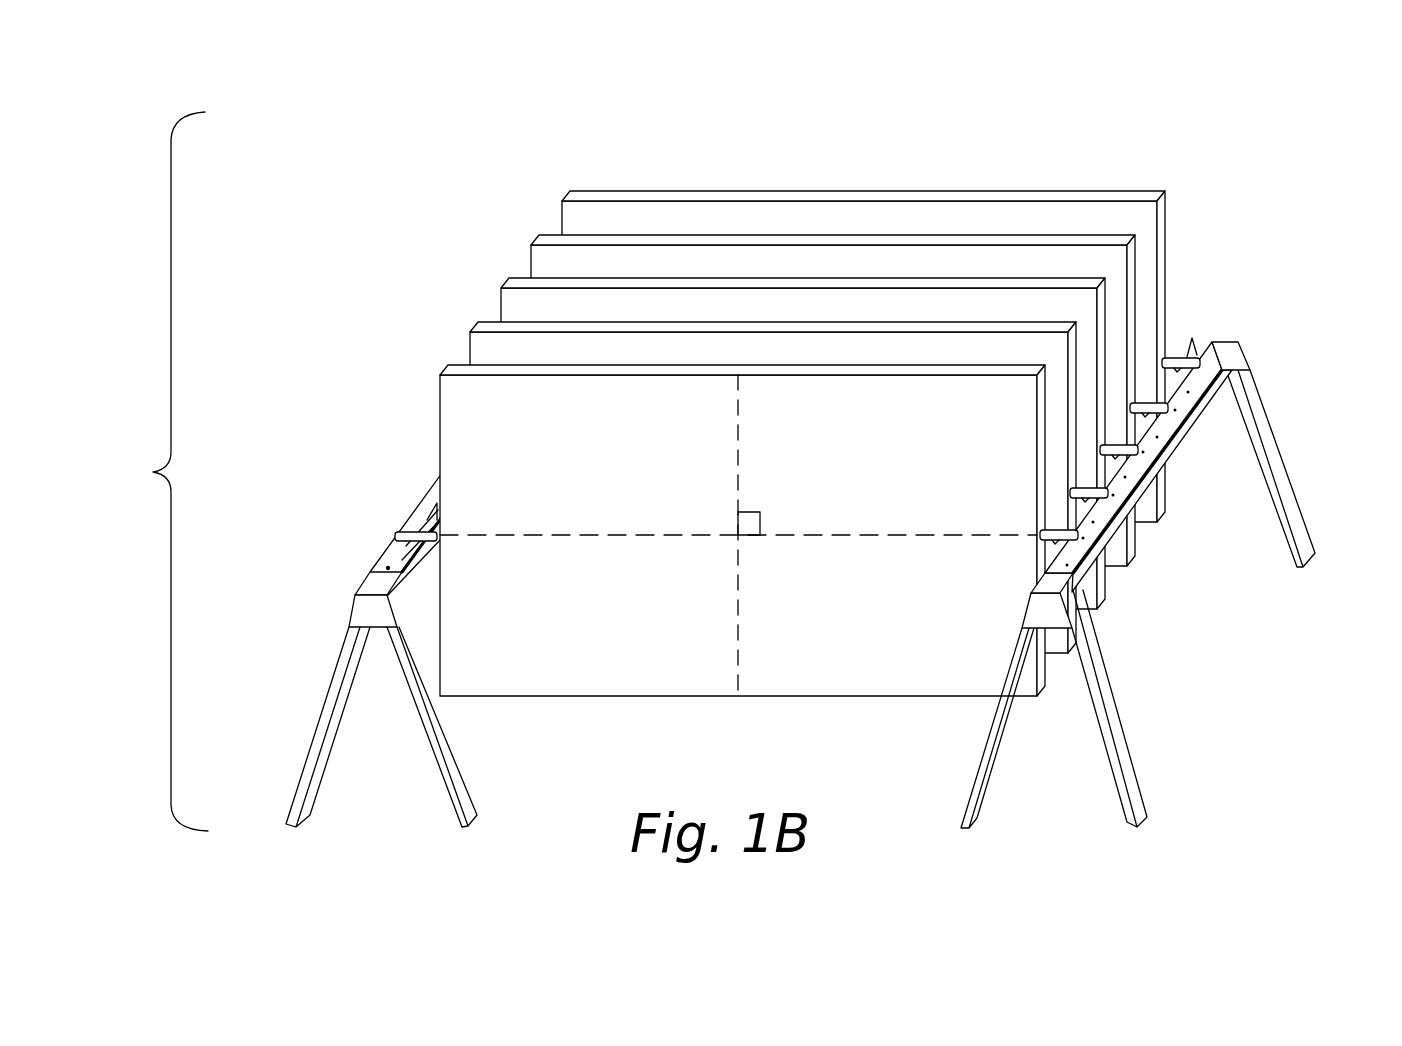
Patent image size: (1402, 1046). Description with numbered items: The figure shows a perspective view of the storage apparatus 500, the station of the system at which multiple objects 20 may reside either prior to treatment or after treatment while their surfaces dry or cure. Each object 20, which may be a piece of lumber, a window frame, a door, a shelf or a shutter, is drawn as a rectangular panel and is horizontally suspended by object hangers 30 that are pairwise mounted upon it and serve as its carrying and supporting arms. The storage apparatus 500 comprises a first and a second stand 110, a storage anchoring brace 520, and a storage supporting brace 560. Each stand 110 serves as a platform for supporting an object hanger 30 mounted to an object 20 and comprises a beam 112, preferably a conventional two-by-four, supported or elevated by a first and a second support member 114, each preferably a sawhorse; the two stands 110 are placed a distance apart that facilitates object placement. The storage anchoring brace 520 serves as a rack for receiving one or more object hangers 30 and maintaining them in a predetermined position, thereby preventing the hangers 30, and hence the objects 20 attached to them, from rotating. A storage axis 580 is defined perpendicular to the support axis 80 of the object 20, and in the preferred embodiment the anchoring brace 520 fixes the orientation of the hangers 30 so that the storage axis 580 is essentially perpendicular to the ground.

The object 20 is at (525, 375).
The object hanger 30 is at (396, 533).
The support axis 80 is at (850, 525).
The stand 110 is at (801, 544).
The beam 112 is at (1233, 342).
The support member 114 is at (1270, 447).
The storage apparatus 500 is at (150, 471).
The storage anchoring brace 520 is at (385, 548).
The storage supporting brace 560 is at (1153, 440).
The storage axis 580 is at (738, 622).